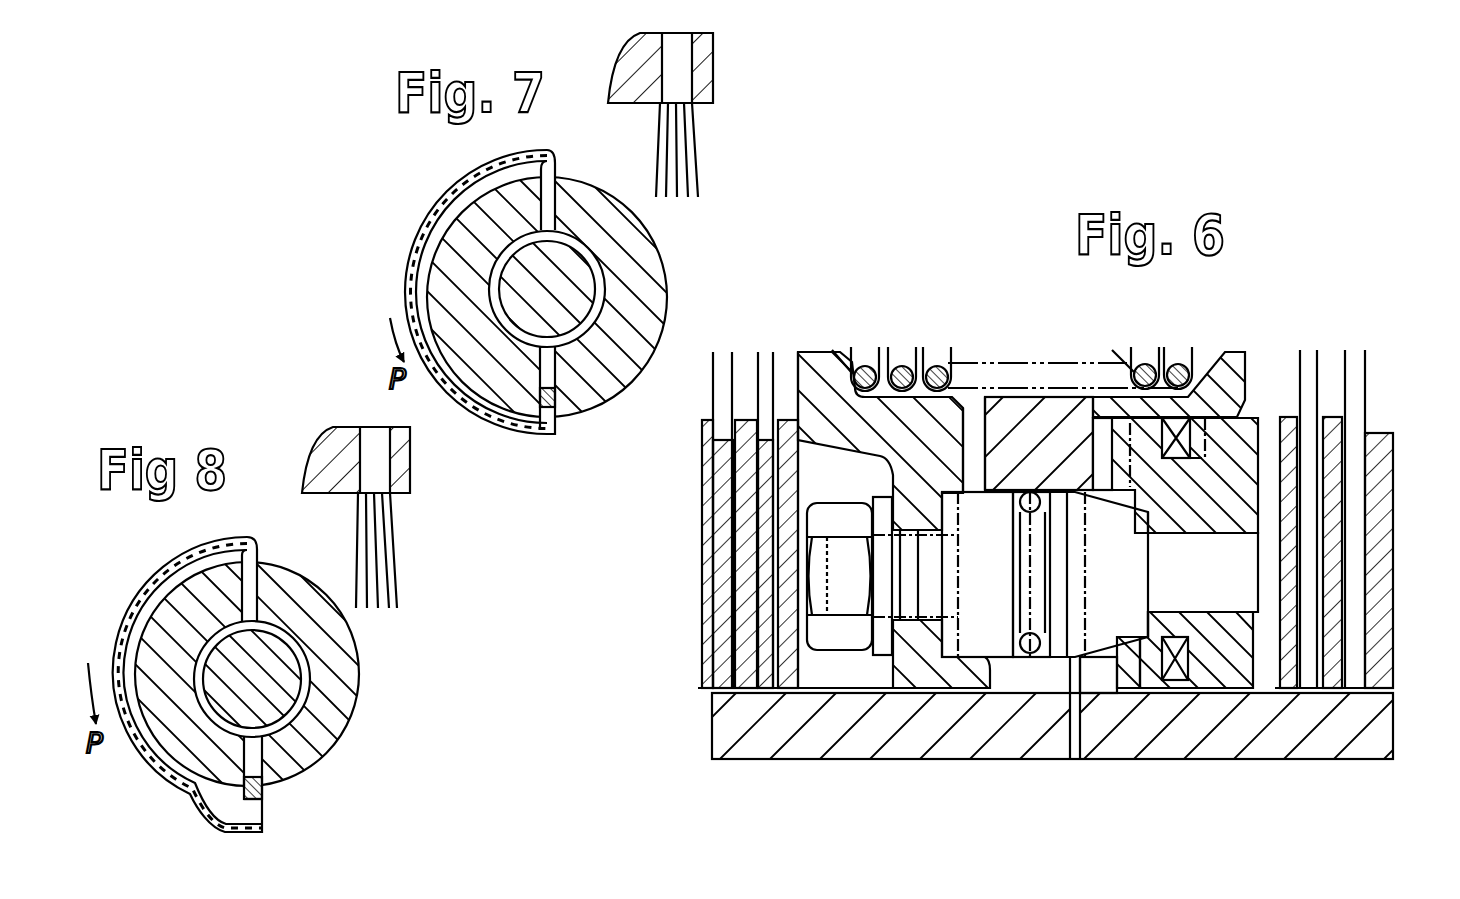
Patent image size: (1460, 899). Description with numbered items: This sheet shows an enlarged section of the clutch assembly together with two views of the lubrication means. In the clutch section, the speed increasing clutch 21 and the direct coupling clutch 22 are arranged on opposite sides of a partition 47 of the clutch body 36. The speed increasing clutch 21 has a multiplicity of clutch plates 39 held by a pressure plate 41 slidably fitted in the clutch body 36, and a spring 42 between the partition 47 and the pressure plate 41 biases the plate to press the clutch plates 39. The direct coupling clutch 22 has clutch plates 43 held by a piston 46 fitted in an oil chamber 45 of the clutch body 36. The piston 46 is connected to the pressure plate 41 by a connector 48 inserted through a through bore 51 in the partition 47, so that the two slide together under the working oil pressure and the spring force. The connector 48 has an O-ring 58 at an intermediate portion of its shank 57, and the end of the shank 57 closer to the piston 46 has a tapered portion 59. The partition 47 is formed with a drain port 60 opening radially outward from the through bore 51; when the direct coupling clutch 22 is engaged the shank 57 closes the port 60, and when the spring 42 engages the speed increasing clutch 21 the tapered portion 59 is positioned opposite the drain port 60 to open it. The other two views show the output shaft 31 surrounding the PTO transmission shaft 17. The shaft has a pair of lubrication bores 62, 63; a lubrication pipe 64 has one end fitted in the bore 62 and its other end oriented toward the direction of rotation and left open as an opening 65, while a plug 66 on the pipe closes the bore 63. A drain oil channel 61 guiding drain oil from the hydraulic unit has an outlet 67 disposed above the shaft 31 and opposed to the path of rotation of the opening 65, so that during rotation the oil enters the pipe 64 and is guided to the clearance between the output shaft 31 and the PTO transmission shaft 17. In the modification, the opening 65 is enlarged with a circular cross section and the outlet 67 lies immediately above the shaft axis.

In FIG. 7, the PTO transmission shaft 17 is at (575, 292).
In FIG. 8, the PTO transmission shaft 17 is at (280, 672).
In FIG. 6, the speed increasing clutch 21 is at (727, 700).
In FIG. 6, the direct coupling clutch 22 is at (1348, 695).
In FIG. 7, the output shaft 31 is at (647, 240).
In FIG. 8, the output shaft 31 is at (340, 692).
In FIG. 6, the clutch body 36 is at (815, 748).
In FIG. 6, the clutch plates 39 is at (748, 680).
In FIG. 6, the pressure plate 41 is at (895, 660).
In FIG. 6, the spring 42 is at (1140, 392).
In FIG. 6, the clutch plates 43 is at (1290, 648).
In FIG. 6, the oil chamber 45 is at (1108, 675).
In FIG. 6, the piston 46 is at (1232, 667).
In FIG. 6, the partition 47 is at (1017, 418).
In FIG. 6, the connector 48 is at (945, 647).
In FIG. 6, the through bore 51 is at (990, 630).
In FIG. 6, the shank 57 is at (1000, 633).
In FIG. 6, the O-ring 58 is at (1032, 652).
In FIG. 6, the tapered portion 59 is at (1123, 677).
In FIG. 6, the drain port 60 is at (1066, 735).
In FIG. 7, the drain oil channel 61 is at (685, 57).
In FIG. 8, the drain oil channel 61 is at (385, 470).
In FIG. 7, the lubrication bore 62 is at (557, 186).
In FIG. 8, the lubrication bore 62 is at (259, 576).
In FIG. 7, the lubrication bore 63 is at (558, 370).
In FIG. 8, the lubrication bore 63 is at (264, 745).
In FIG. 7, the lubrication pipe 64 is at (452, 188).
In FIG. 8, the lubrication pipe 64 is at (142, 600).
In FIG. 7, the opening 65 is at (557, 432).
In FIG. 8, the opening 65 is at (264, 826).
In FIG. 7, the plug 66 is at (558, 402).
In FIG. 8, the plug 66 is at (264, 785).
In FIG. 7, the outlet 67 is at (680, 113).
In FIG. 8, the outlet 67 is at (378, 500).